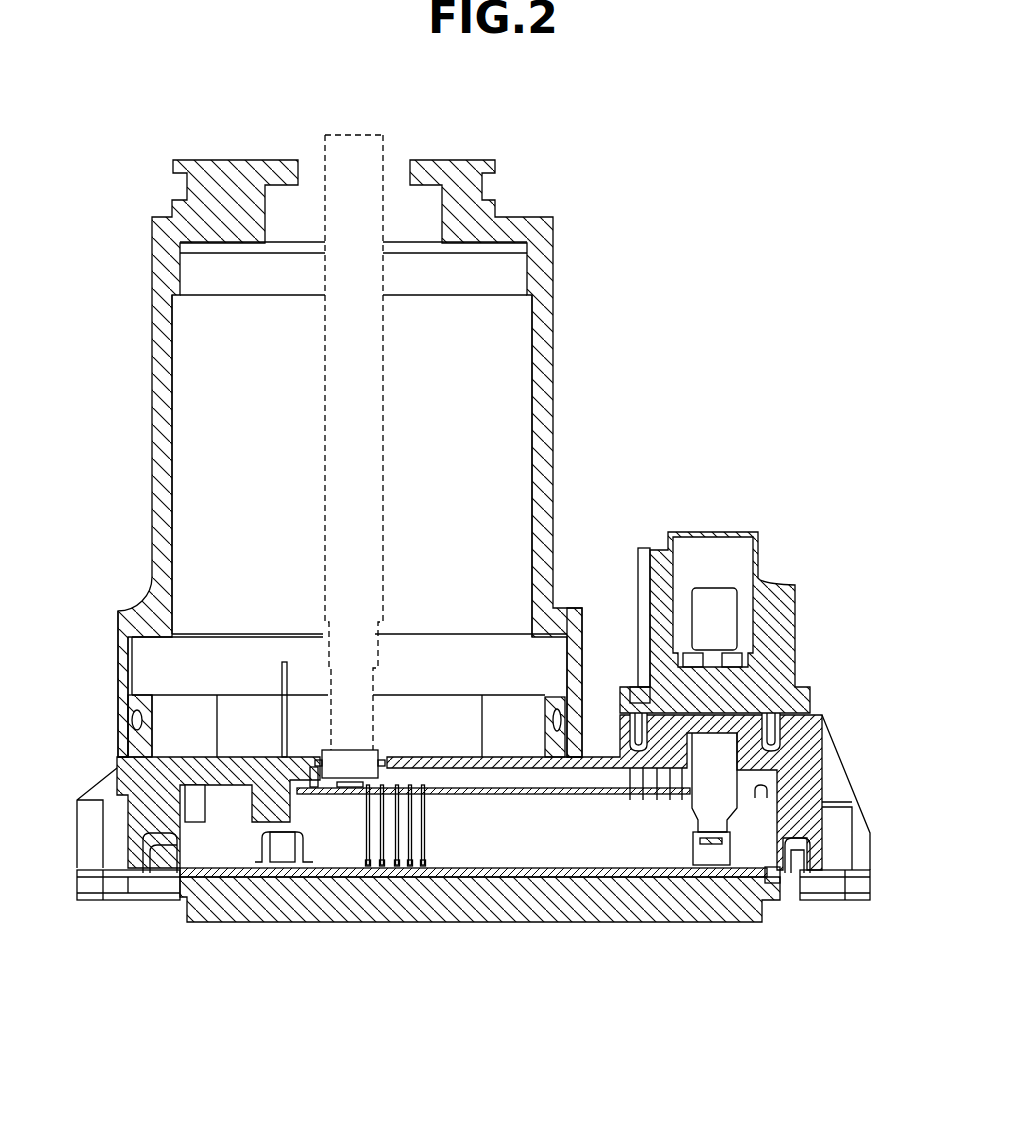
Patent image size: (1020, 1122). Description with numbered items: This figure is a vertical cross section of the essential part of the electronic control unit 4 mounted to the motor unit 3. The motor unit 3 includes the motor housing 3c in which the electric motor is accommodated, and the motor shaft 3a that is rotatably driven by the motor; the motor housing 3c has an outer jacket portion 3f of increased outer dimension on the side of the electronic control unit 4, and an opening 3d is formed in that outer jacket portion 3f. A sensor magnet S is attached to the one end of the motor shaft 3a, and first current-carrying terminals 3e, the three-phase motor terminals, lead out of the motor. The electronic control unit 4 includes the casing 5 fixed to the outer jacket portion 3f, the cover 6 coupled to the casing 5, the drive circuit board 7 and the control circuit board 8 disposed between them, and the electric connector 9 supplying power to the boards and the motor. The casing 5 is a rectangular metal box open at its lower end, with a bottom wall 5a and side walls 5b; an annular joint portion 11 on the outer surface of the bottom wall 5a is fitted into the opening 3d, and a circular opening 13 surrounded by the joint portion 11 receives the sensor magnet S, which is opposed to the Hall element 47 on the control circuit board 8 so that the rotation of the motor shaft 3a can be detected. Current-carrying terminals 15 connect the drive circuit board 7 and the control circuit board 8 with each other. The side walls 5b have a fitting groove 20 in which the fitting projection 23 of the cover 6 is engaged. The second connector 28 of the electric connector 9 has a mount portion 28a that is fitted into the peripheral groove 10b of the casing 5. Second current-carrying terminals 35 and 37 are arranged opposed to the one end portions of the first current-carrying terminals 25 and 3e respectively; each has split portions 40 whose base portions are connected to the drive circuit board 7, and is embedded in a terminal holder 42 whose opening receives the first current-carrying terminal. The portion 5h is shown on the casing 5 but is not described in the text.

The motor unit 3 is at (348, 415).
The motor shaft 3a is at (370, 142).
The motor housing 3c is at (543, 231).
The opening 3d is at (578, 650).
The first current-carrying terminal 3e is at (280, 663).
The outer jacket portion 3f is at (122, 658).
The electronic control unit 4 is at (263, 974).
The casing 5 is at (479, 767).
The bottom wall 5a is at (200, 757).
The side wall 5b is at (130, 790).
The housing flange 5h is at (800, 820).
The cover 6 is at (480, 897).
The drive circuit board 7 is at (528, 904).
The control circuit board 8 is at (487, 803).
The electric connector 9 is at (733, 658).
The peripheral groove 10b is at (812, 705).
The joint portion 11 is at (552, 700).
The opening 13 is at (383, 757).
The current-carrying terminal 15 is at (368, 866).
The fitting groove 20 is at (140, 900).
The fitting projection 23 is at (172, 873).
The first current-carrying terminal 25 is at (717, 783).
The second connector 28 is at (782, 590).
The mount portion 28a is at (636, 740).
The second current-carrying terminal 35 is at (685, 849).
The second current-carrying terminal 37 is at (320, 852).
The split portion 40 is at (304, 838).
The terminal holder 42 is at (263, 865).
The Hall element 47 is at (352, 790).
The sensor magnet S is at (350, 760).